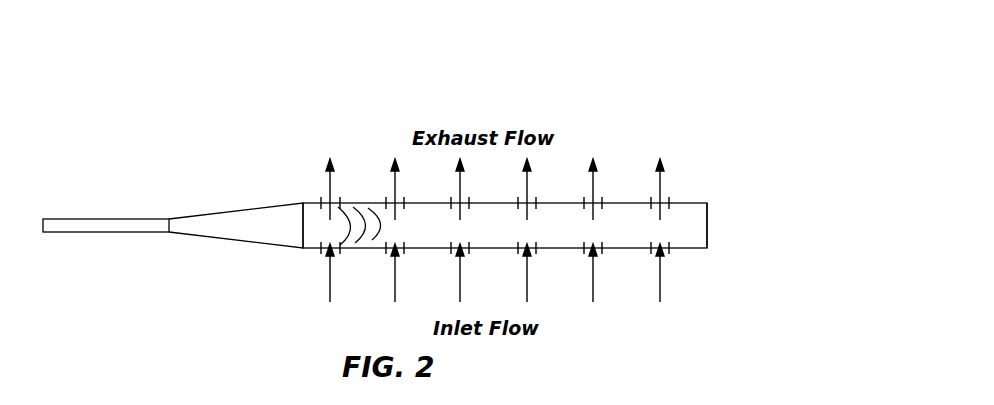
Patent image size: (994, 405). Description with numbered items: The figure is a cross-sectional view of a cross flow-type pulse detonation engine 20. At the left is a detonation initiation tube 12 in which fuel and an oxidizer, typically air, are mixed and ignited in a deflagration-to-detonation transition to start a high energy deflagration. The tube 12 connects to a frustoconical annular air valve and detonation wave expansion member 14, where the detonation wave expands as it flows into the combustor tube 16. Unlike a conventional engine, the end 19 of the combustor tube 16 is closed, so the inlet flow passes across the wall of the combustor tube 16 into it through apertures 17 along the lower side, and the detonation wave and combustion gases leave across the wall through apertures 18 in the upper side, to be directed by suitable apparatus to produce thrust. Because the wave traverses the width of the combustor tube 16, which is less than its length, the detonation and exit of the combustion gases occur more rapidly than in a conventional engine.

The detonation initiation tube 12 is at (108, 221).
The frustoconical annular air valve and detonation wave expansion member 14 is at (236, 209).
The combustor tube 16 is at (615, 202).
The apertures 17 is at (320, 250).
The apertures 18 is at (340, 203).
The end 19 is at (708, 228).
The cross flow-type pulse detonation engine 20 is at (409, 181).